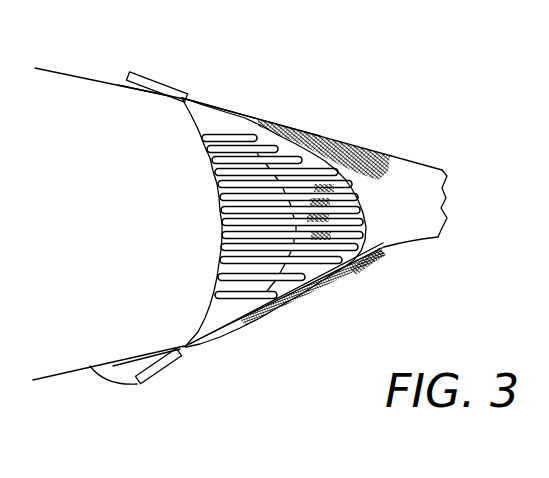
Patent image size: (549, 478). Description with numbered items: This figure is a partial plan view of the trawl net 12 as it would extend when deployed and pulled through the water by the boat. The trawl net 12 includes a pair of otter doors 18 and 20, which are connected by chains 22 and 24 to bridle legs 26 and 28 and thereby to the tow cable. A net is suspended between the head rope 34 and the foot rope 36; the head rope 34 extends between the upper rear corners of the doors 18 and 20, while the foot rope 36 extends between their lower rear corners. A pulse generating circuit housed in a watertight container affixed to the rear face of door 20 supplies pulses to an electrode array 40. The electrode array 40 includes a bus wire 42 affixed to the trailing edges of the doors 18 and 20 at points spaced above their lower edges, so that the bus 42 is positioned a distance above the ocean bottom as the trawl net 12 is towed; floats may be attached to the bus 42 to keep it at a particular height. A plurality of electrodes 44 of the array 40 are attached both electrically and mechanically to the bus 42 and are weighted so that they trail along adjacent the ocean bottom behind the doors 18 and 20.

The trawl net 12 is at (412, 156).
The otter door 18 is at (147, 87).
The otter door 20 is at (182, 354).
The chain 22 is at (147, 92).
The chain 24 is at (128, 363).
The bridle leg 26 is at (64, 73).
The bridle leg 28 is at (60, 373).
The head rope 34 is at (231, 127).
The foot rope 36 is at (364, 180).
The electrode array 40 is at (186, 222).
The bus wire 42 is at (203, 323).
The electrodes 44 is at (213, 202).